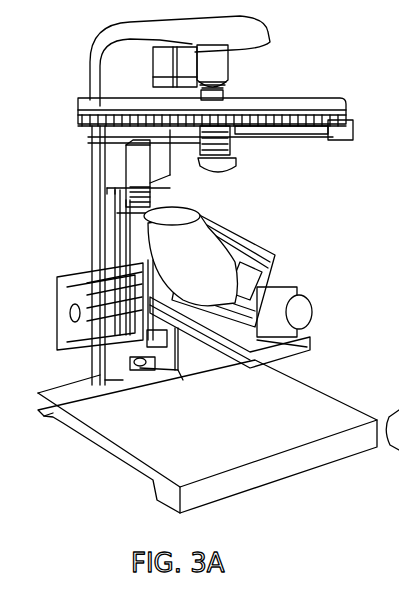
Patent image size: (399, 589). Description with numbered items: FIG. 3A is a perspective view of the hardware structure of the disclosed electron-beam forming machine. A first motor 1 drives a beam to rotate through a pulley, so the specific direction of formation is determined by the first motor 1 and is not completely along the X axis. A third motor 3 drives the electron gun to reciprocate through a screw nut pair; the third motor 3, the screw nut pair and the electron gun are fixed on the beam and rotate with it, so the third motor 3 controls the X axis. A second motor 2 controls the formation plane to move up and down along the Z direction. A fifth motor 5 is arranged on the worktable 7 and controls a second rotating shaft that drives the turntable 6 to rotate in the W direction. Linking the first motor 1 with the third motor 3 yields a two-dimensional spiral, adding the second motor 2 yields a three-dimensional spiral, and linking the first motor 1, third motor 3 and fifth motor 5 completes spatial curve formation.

The first motor 1 is at (167, 55).
The second motor 2 is at (142, 173).
The third motor 3 is at (343, 135).
The fifth motor 5 is at (300, 310).
The turntable 6 is at (240, 258).
The worktable 7 is at (210, 340).